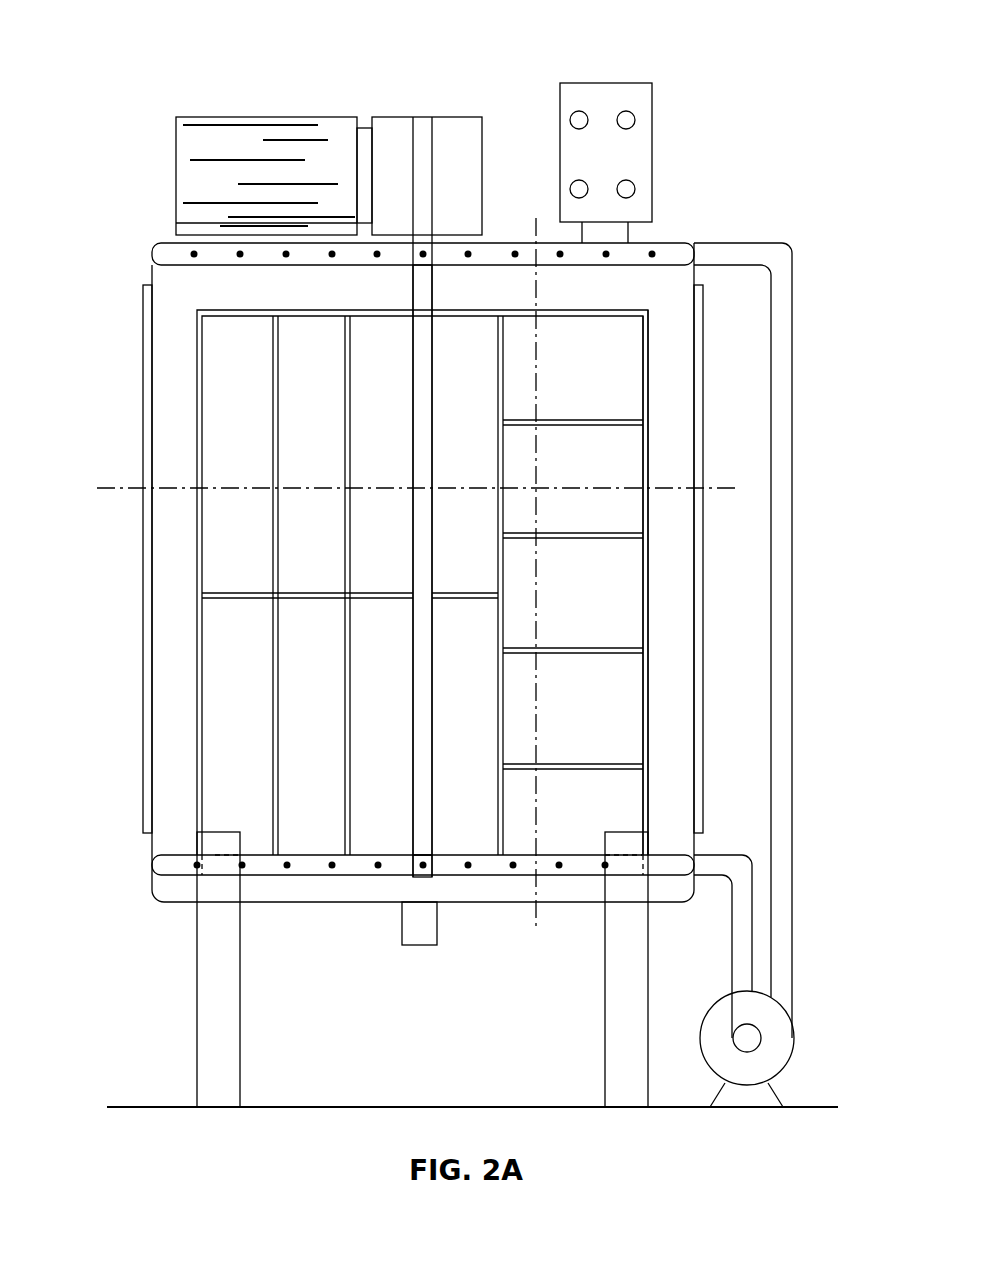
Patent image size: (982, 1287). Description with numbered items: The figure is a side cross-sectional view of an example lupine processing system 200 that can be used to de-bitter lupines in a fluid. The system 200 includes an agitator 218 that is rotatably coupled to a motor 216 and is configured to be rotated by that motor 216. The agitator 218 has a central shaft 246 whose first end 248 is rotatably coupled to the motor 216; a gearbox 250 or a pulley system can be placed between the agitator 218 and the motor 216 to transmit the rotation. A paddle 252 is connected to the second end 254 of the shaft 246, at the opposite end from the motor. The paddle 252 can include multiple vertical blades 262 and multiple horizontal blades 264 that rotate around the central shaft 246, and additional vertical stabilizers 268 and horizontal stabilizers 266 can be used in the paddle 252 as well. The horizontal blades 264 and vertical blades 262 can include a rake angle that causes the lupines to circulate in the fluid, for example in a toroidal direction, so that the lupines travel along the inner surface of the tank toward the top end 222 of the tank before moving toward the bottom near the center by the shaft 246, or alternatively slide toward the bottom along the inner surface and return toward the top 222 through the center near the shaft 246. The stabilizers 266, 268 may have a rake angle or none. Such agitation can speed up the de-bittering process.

The lupine processing system 200 is at (132, 35).
The motor 216 is at (272, 117).
The agitator 218 is at (160, 374).
The top end of the tank 222 is at (637, 138).
The central shaft 246 is at (422, 293).
The first end 248 is at (423, 253).
The gearbox 250 is at (395, 117).
The paddle 252 is at (645, 566).
The second end 254 is at (423, 864).
The vertical blades 262 is at (277, 712).
The horizontal blades 264 is at (603, 768).
The horizontal stabilizers 266 is at (245, 597).
The vertical stabilizers 268 is at (497, 637).